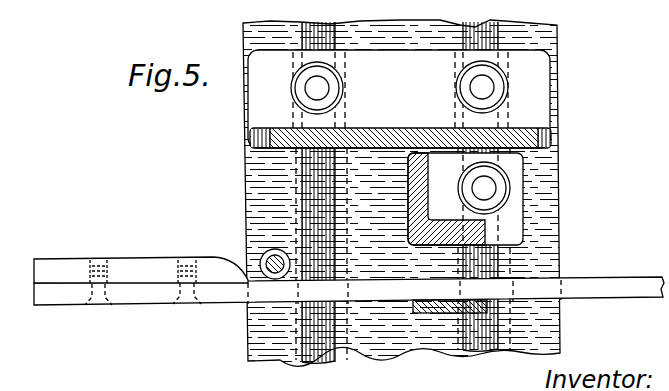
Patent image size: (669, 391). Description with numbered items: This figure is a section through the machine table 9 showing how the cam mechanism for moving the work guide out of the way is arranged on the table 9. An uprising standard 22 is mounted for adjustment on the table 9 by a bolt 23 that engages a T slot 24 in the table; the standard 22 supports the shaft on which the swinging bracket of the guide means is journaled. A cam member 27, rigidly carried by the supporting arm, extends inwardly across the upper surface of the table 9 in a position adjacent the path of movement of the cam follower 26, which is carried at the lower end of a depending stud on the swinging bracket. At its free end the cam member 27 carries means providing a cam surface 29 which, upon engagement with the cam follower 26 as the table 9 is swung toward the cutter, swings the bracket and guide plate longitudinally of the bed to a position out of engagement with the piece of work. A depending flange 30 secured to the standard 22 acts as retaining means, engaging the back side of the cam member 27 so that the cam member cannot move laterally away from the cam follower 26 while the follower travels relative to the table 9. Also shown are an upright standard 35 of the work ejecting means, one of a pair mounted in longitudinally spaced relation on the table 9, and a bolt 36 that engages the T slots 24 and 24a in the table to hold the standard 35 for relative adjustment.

The table 9 is at (557, 170).
The standard 22 is at (523, 233).
The bolt 23 is at (512, 205).
The T slot 24 is at (488, 352).
The T slot 24a is at (320, 352).
The cam follower 26 is at (271, 249).
The cam member 27 is at (140, 296).
The cam surface 29 is at (135, 258).
The depending flange 30 is at (424, 318).
The upright standard 35 is at (553, 136).
The bolt 36 is at (535, 80).